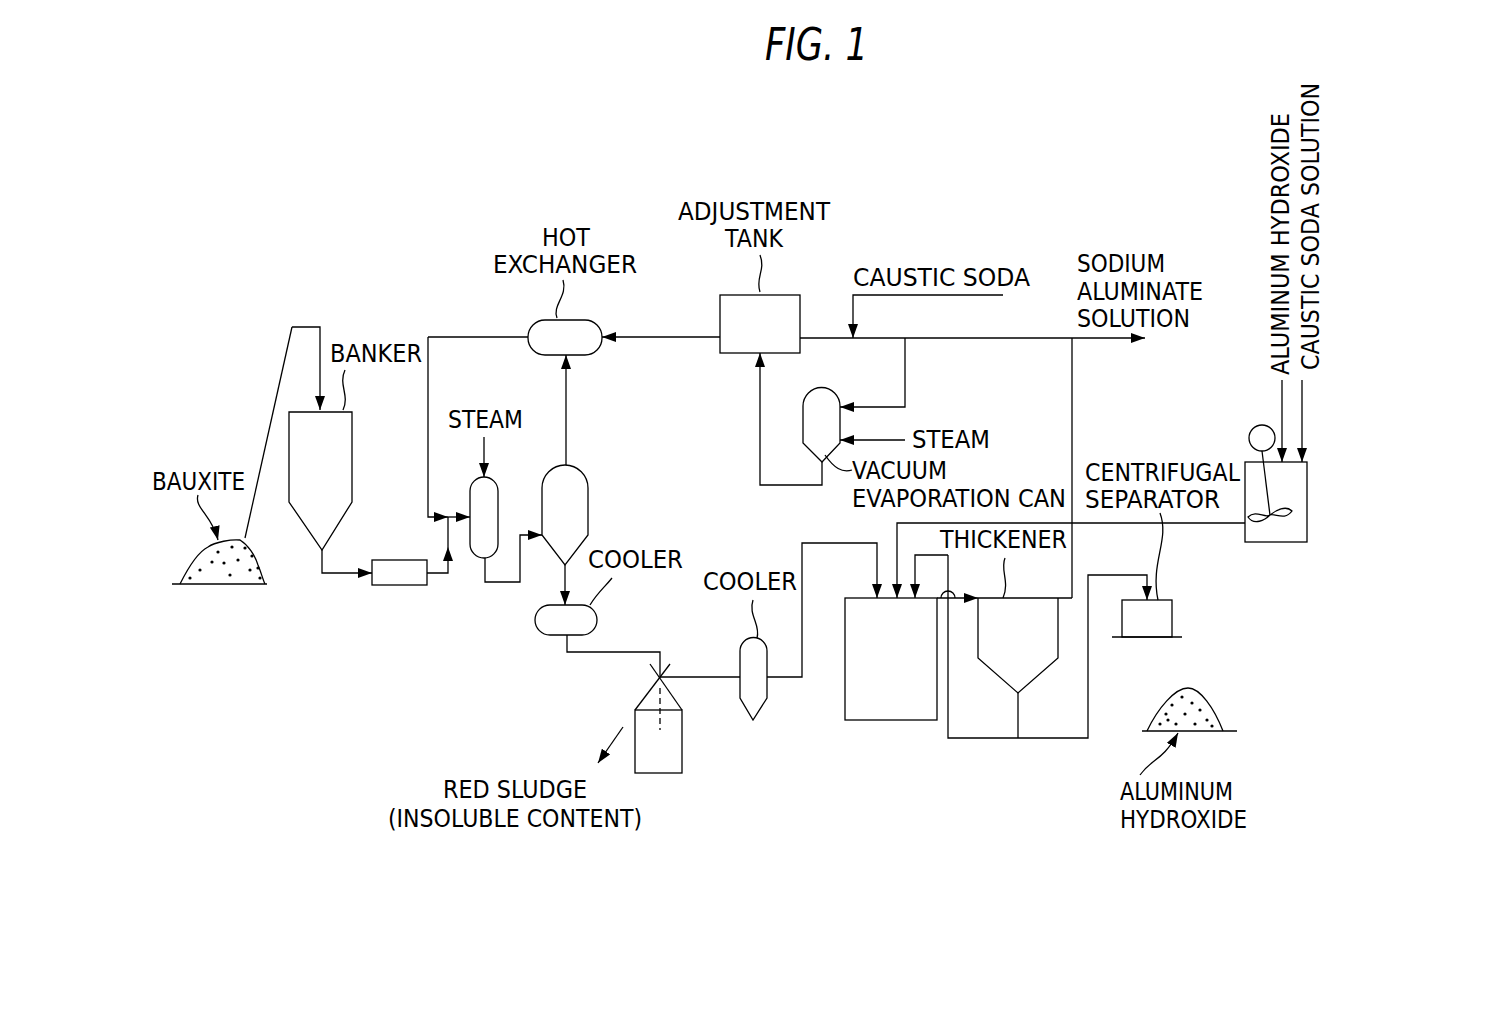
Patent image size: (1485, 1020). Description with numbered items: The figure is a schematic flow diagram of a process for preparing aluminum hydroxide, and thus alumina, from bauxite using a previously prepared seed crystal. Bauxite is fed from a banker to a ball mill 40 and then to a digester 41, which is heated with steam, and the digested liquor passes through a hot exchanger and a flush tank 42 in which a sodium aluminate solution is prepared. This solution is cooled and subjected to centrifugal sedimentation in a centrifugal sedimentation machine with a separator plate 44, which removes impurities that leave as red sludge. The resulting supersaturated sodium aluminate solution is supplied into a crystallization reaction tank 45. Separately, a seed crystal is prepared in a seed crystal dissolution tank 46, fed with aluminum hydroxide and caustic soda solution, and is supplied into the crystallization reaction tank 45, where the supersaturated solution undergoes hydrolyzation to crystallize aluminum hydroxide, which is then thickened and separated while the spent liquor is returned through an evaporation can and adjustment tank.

The ball mill 40 is at (375, 585).
The digester 41 is at (473, 560).
The flush tank 42 is at (568, 463).
The centrifugal sedimentating machine with a separator plate 44 is at (663, 773).
The crystallization reaction tank 45 is at (895, 720).
The seed crystal dissolving tank 46 is at (1262, 542).